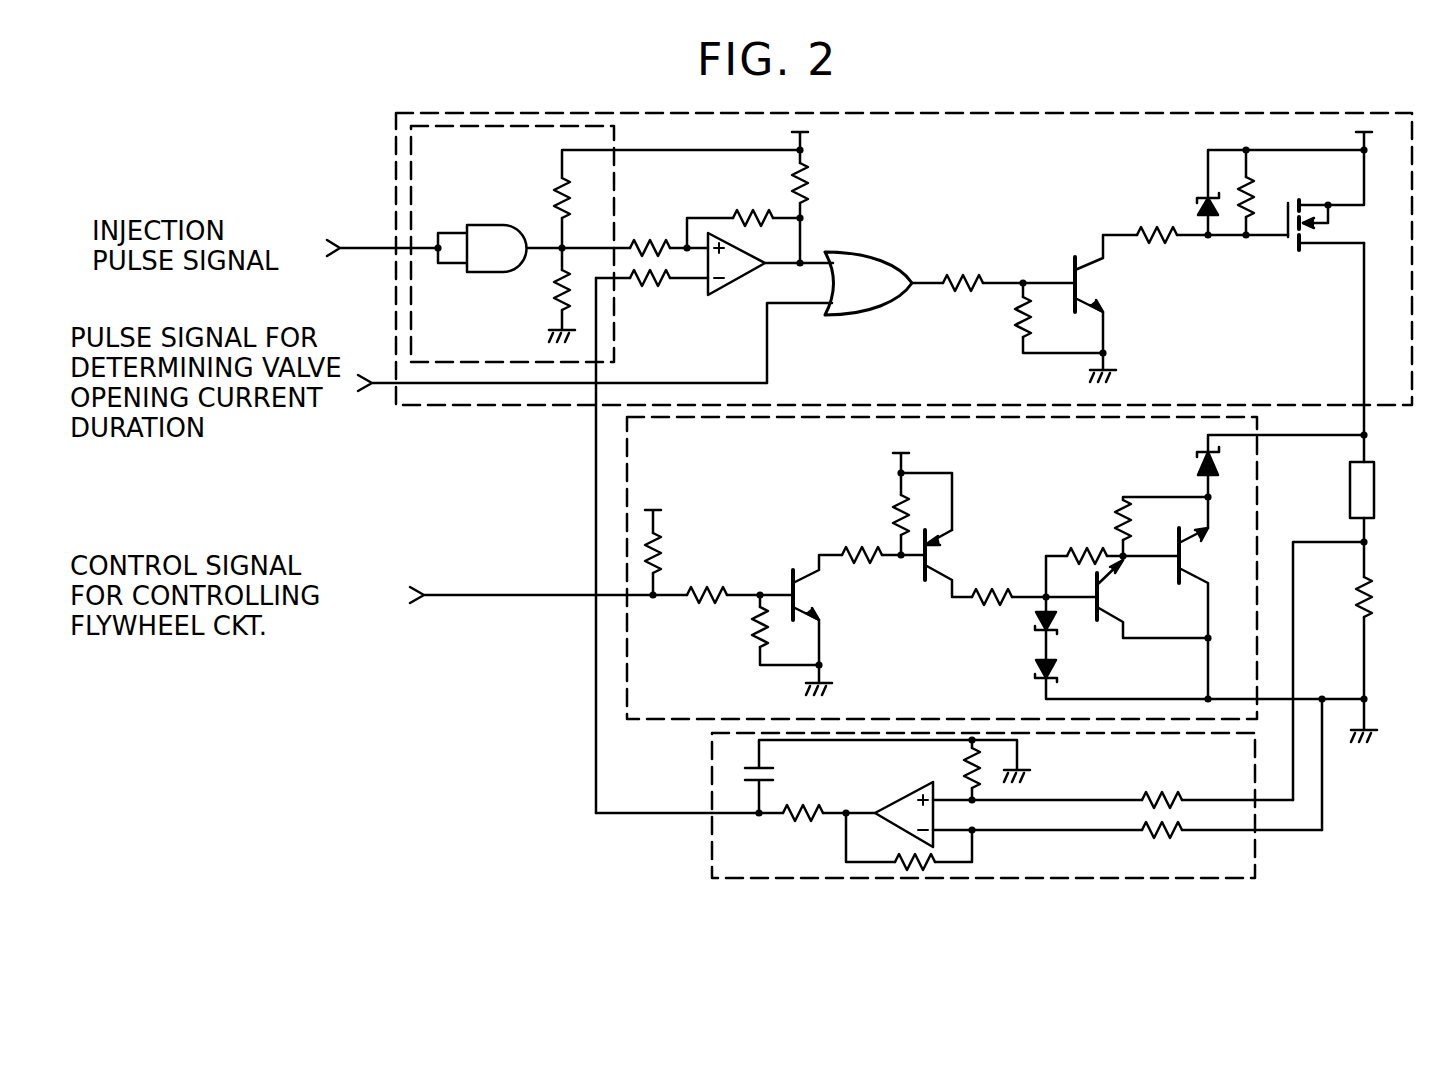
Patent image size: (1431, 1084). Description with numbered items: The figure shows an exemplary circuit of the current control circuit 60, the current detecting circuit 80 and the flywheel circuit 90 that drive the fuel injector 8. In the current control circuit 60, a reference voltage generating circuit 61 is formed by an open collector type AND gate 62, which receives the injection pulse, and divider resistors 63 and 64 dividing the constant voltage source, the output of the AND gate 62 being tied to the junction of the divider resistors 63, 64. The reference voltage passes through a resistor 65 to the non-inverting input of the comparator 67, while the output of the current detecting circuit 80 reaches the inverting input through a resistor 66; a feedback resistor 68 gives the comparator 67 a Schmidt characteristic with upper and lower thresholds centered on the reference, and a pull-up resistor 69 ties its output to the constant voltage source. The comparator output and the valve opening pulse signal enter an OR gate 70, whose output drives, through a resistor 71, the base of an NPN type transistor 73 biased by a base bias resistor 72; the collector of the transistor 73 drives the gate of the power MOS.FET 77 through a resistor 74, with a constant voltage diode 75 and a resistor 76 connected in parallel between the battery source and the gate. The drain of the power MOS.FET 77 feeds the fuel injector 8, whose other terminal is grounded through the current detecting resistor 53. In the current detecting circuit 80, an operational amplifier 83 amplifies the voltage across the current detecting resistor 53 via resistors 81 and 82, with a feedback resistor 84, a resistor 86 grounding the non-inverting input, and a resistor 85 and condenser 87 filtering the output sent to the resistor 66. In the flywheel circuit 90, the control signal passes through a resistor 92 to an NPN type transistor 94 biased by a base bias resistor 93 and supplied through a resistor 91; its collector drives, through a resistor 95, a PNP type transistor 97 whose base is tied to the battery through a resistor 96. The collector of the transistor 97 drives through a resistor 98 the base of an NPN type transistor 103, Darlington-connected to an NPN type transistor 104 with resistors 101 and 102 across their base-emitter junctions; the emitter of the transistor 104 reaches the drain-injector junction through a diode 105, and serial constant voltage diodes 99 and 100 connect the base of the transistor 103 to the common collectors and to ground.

The fuel injector 8 is at (1375, 496).
The current detecting resistor 53 is at (1372, 596).
The current control circuit 60 is at (500, 410).
The reference voltage generating circuit 61 is at (618, 181).
The AND gate 62 is at (492, 226).
The divider resistor 63 is at (556, 198).
The divider resistor 64 is at (556, 290).
The resistor 65 is at (652, 242).
The resistor 66 is at (652, 288).
The comparator 67 is at (735, 285).
The feedback resistor 68 is at (752, 215).
The resistor 69 is at (812, 190).
The OR gate 70 is at (863, 256).
The resistor 71 is at (964, 277).
The base bias resistor 72 is at (1017, 318).
The NPN type transistor 73 is at (1100, 292).
The resistor 74 is at (1150, 226).
The constant voltage diode 75 is at (1200, 196).
The resistor 76 is at (1260, 196).
The power MOS.FET 77 is at (1292, 245).
The current detecting circuit 80 is at (712, 757).
The resistor 81 is at (1162, 795).
The resistor 82 is at (1160, 838).
The operational amplifier 83 is at (908, 796).
The feedback resistor 84 is at (935, 858).
The resistor 85 is at (806, 826).
The resistor 86 is at (1008, 795).
The condenser 87 is at (776, 783).
The flywheel circuit 90 is at (625, 522).
The resistor 91 is at (667, 556).
The resistor 92 is at (732, 590).
The base bias resistor 93 is at (752, 634).
The NPN type transistor 94 is at (810, 608).
The resistor 95 is at (855, 545).
The resistor 96 is at (898, 507).
The PNP type transistor 97 is at (946, 553).
The resistor 98 is at (998, 597).
The constant voltage diode 99 is at (1034, 630).
The constant voltage diode 100 is at (1034, 678).
The resistor 101 is at (1085, 550).
The resistor 102 is at (1117, 500).
The NPN type transistor 103 is at (1108, 598).
The NPN type transistor 104 is at (1200, 552).
The diode 105 is at (1195, 462).